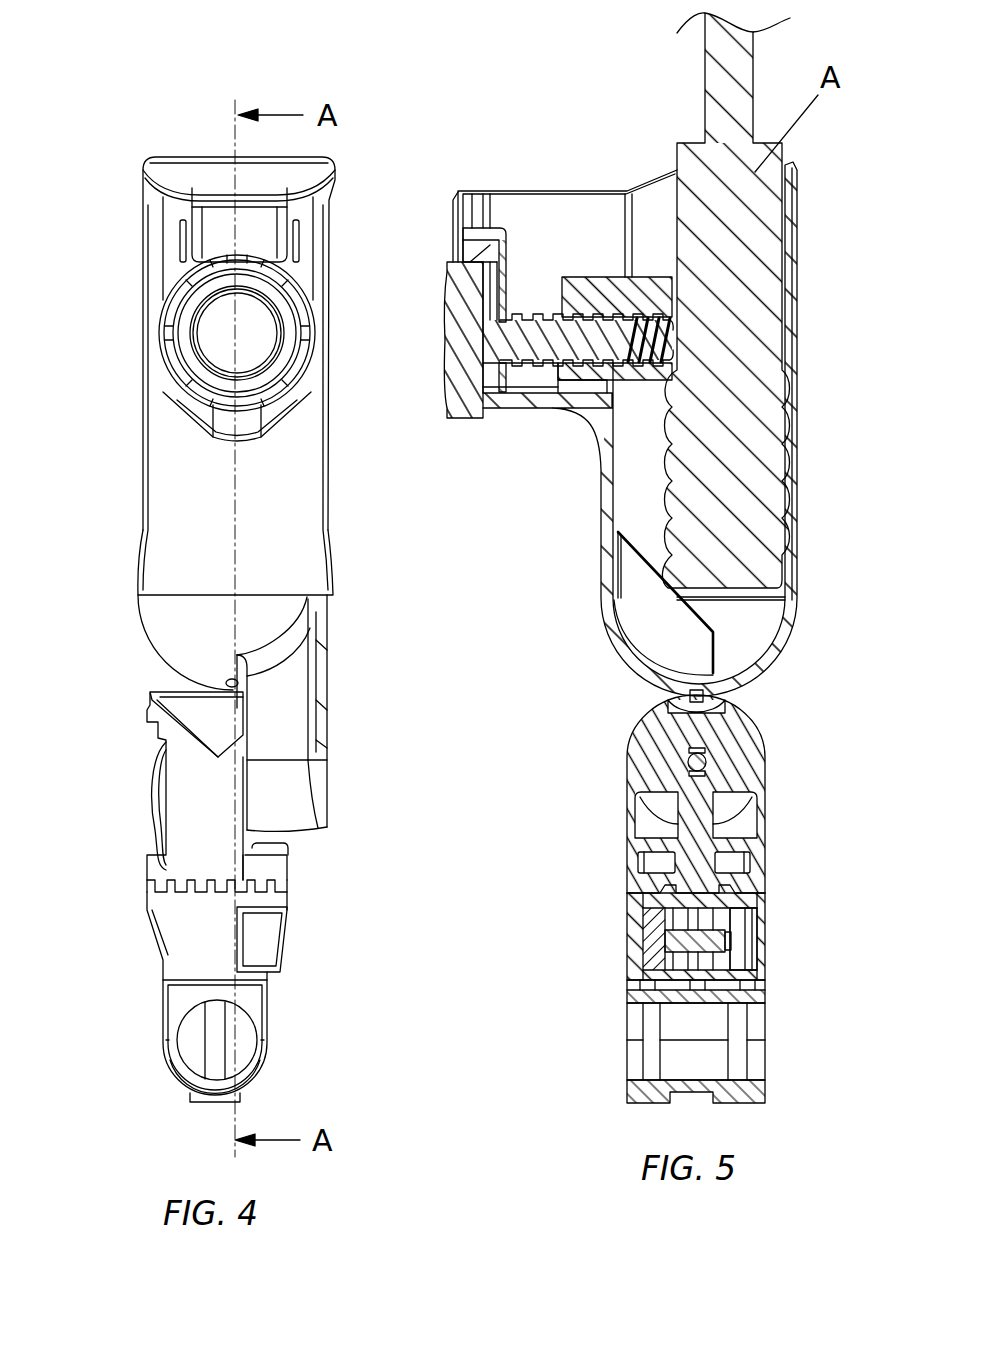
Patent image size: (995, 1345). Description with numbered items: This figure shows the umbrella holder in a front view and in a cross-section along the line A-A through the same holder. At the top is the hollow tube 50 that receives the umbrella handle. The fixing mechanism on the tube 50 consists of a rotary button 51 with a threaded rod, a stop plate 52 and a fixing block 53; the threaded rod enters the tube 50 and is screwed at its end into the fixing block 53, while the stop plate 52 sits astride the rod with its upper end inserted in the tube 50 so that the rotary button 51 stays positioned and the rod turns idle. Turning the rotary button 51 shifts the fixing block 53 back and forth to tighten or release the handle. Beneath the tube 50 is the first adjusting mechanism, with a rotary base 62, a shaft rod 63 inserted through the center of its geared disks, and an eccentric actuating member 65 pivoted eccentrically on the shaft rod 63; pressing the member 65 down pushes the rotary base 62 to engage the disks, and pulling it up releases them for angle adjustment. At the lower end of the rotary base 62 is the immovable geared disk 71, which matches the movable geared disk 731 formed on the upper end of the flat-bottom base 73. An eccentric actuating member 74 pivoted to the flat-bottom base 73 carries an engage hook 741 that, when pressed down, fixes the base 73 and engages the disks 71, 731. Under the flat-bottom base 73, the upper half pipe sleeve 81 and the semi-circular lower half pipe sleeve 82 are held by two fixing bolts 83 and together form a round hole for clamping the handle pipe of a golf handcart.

In FIG. 4, the hollow tube 50 is at (303, 505).
In FIG. 5, the hollow tube 50 is at (603, 495).
In FIG. 4, the rotary button 51 is at (305, 323).
In FIG. 5, the rotary button 51 is at (458, 353).
In FIG. 5, the stop plate 52 is at (500, 233).
In FIG. 5, the fixing block 53 is at (612, 293).
In FIG. 4, the rotary base 62 is at (192, 835).
In FIG. 5, the rotary base 62 is at (645, 772).
In FIG. 5, the shaft rod 63 is at (688, 757).
In FIG. 4, the eccentric actuating member 65 is at (157, 803).
In FIG. 4, the immovable geared disk 71 is at (294, 867).
In FIG. 4, the movable geared disk 731 is at (285, 883).
In FIG. 4, the flat-bottom base 73 is at (182, 938).
In FIG. 5, the flat-bottom base 73 is at (640, 898).
In FIG. 4, the eccentric actuating member 74 is at (280, 927).
In FIG. 5, the eccentric actuating member 74 is at (752, 900).
In FIG. 5, the engage hook 741 is at (672, 940).
In FIG. 4, the upper half pipe sleeve 81 is at (262, 1007).
In FIG. 5, the upper half pipe sleeve 81 is at (627, 995).
In FIG. 4, the lower half pipe sleeve 82 is at (252, 1068).
In FIG. 5, the lower half pipe sleeve 82 is at (640, 1090).
In FIG. 4, the fixing bolts 83 is at (218, 1030).
In FIG. 5, the fixing bolts 83 is at (652, 1053).